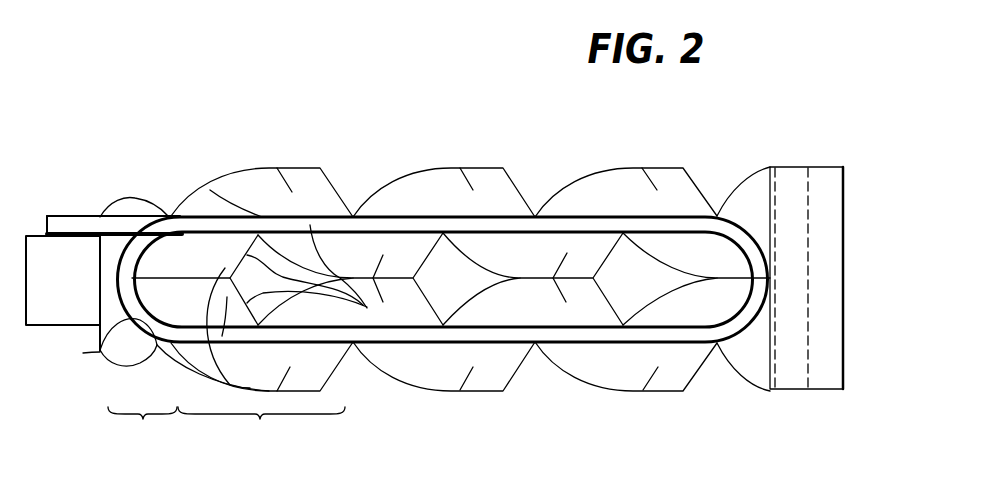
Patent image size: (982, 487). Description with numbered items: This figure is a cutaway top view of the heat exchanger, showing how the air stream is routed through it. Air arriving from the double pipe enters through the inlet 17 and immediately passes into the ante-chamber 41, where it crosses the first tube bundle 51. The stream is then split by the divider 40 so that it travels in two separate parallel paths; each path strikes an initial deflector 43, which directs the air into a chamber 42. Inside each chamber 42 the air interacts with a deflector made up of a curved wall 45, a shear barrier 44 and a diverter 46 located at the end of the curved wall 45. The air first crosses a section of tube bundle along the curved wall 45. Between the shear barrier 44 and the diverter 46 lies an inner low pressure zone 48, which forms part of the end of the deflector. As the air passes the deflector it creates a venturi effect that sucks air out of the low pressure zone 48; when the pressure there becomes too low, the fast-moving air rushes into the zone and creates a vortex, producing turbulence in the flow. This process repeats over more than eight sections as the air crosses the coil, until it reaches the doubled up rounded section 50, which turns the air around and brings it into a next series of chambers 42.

The inlet 17 is at (51, 301).
The divider 40 is at (120, 230).
The ante-chamber 41 is at (142, 431).
The chamber 42 is at (261, 431).
The initial deflector 43 is at (153, 277).
The shear barrier 44 is at (277, 182).
The curved wall 45 is at (210, 190).
The diverter 46 is at (367, 307).
The inner low pressure zone 48 is at (227, 297).
The doubled up rounded section 50 is at (900, 253).
The first tube bundle 51 is at (100, 352).